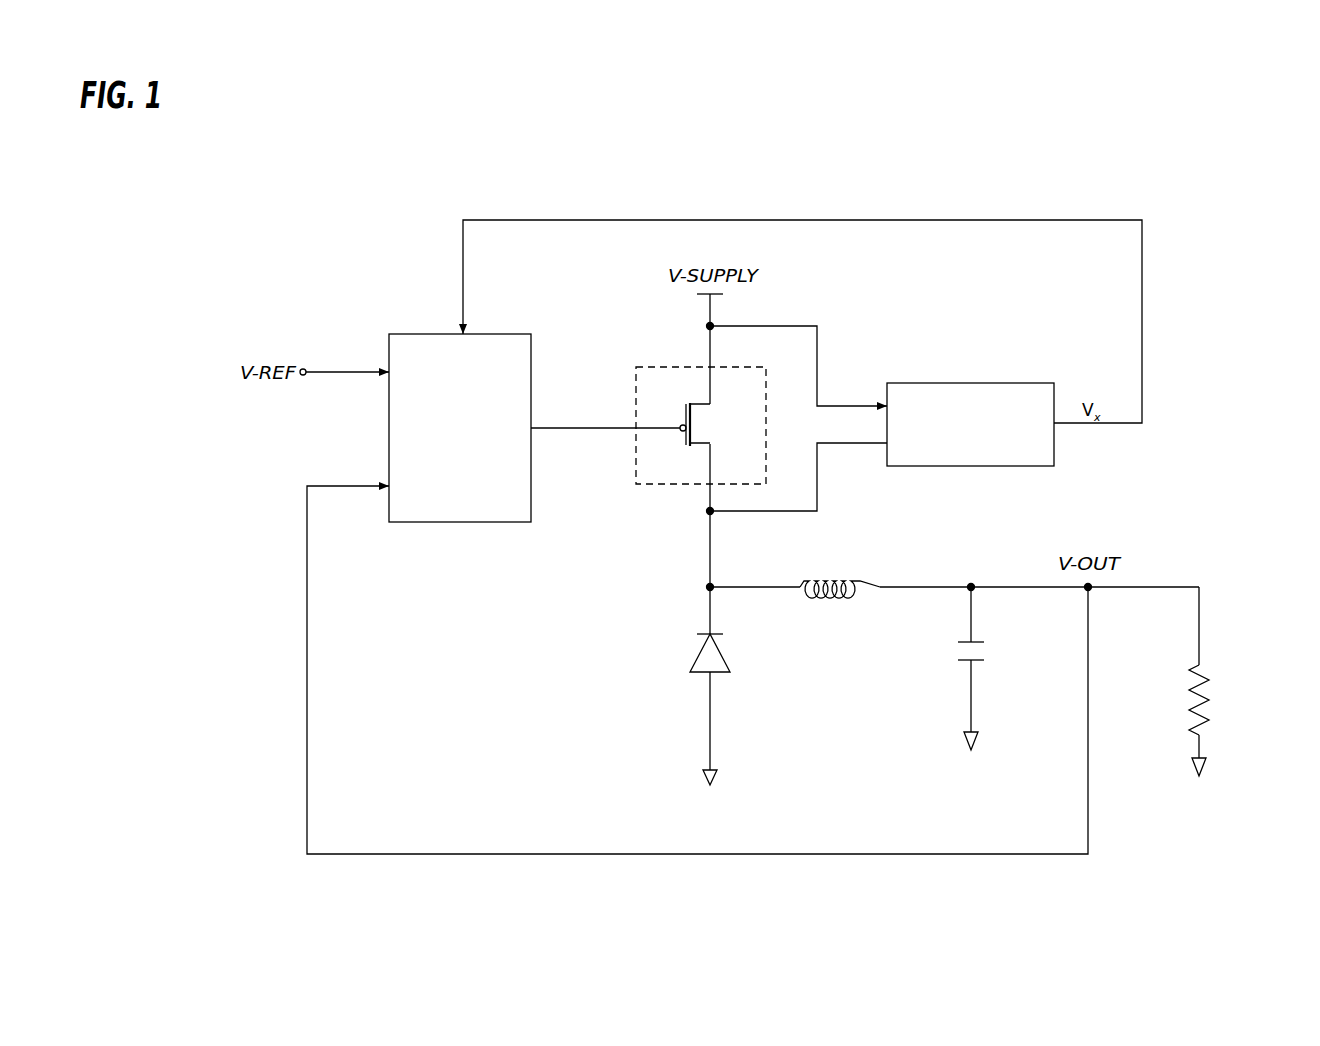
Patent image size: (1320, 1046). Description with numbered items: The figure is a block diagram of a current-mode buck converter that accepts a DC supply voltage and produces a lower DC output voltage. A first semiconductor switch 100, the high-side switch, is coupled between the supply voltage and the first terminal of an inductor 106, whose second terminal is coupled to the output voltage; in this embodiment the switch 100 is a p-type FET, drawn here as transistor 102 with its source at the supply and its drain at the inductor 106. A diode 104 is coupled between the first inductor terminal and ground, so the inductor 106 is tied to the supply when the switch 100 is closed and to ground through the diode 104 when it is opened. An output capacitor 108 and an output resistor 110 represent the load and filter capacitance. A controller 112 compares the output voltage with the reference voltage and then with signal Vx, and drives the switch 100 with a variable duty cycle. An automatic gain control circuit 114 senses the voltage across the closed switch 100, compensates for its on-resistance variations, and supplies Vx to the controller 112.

The first semiconductor switch 100 is at (689, 449).
The transistor switch 102 is at (700, 424).
The diode 104 is at (725, 652).
The inductor 106 is at (846, 597).
The output capacitor 108 is at (963, 665).
The output resistor 110 is at (1212, 688).
The controller 112 is at (455, 523).
The automatic gain control circuit 114 is at (938, 383).